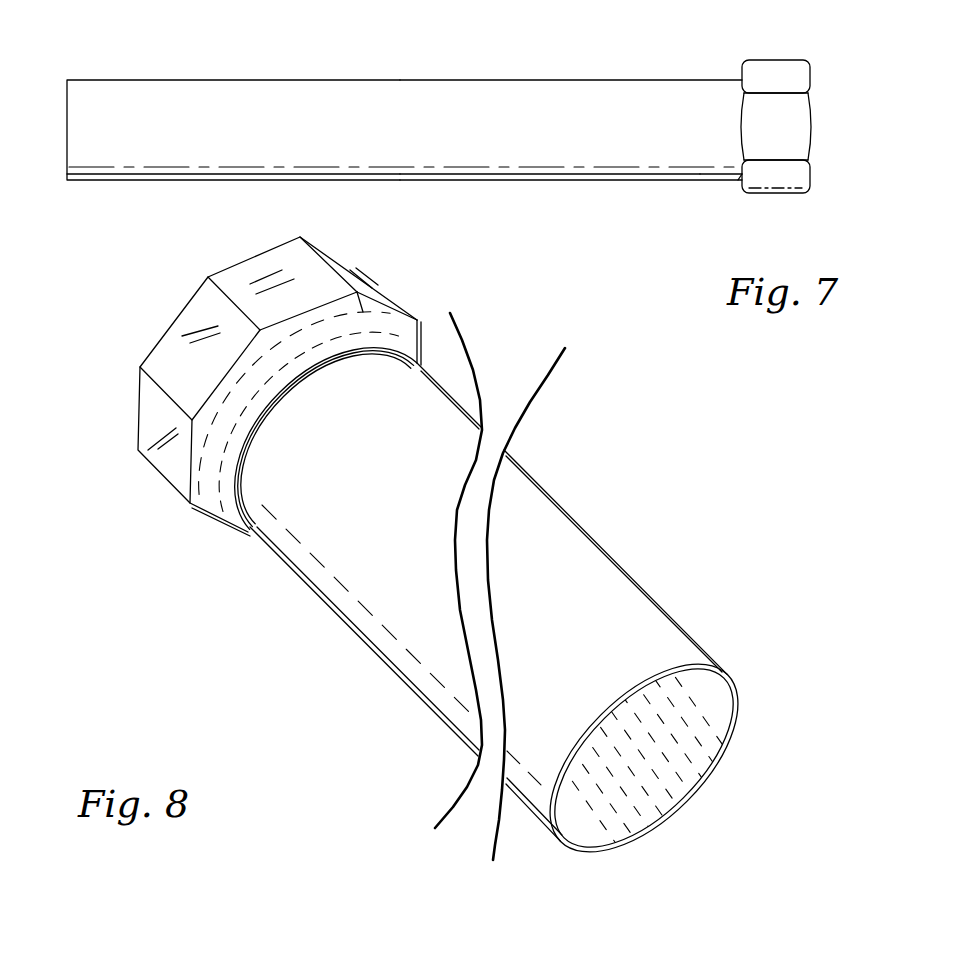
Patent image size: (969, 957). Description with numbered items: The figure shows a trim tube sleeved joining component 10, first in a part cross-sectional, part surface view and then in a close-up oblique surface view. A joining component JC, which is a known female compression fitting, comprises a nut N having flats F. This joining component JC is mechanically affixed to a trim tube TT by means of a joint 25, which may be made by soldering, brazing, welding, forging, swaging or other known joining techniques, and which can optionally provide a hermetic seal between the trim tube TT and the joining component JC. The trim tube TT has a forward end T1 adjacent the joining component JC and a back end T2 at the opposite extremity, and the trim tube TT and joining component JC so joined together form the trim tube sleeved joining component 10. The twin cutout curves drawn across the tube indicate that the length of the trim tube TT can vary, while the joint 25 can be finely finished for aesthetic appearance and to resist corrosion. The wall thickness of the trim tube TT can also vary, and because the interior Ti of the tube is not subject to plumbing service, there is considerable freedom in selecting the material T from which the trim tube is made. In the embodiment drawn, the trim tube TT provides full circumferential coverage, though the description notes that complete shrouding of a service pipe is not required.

In FIG. 7, the trim tube sleeved joining component 10 is at (762, 52).
In FIG. 8, the trim tube sleeved joining component 10 is at (328, 736).
In FIG. 7, the nut N is at (813, 114).
In FIG. 8, the nut N is at (150, 410).
In FIG. 7, the joining component JC is at (776, 126).
In FIG. 8, the joining component JC is at (279, 386).
In FIG. 7, the flats F is at (787, 180).
In FIG. 7, the joint 25 is at (736, 184).
In FIG. 8, the joint 25 is at (316, 374).
In FIG. 8, the material T is at (734, 733).
In FIG. 7, the trim tube TT is at (404, 127).
In FIG. 8, the trim tube TT is at (511, 606).
In FIG. 7, the forward end T1 is at (571, 130).
In FIG. 8, the forward end T1 is at (259, 556).
In FIG. 7, the back end T2 is at (107, 78).
In FIG. 8, the back end T2 is at (732, 664).
In FIG. 8, the interior Ti is at (668, 785).